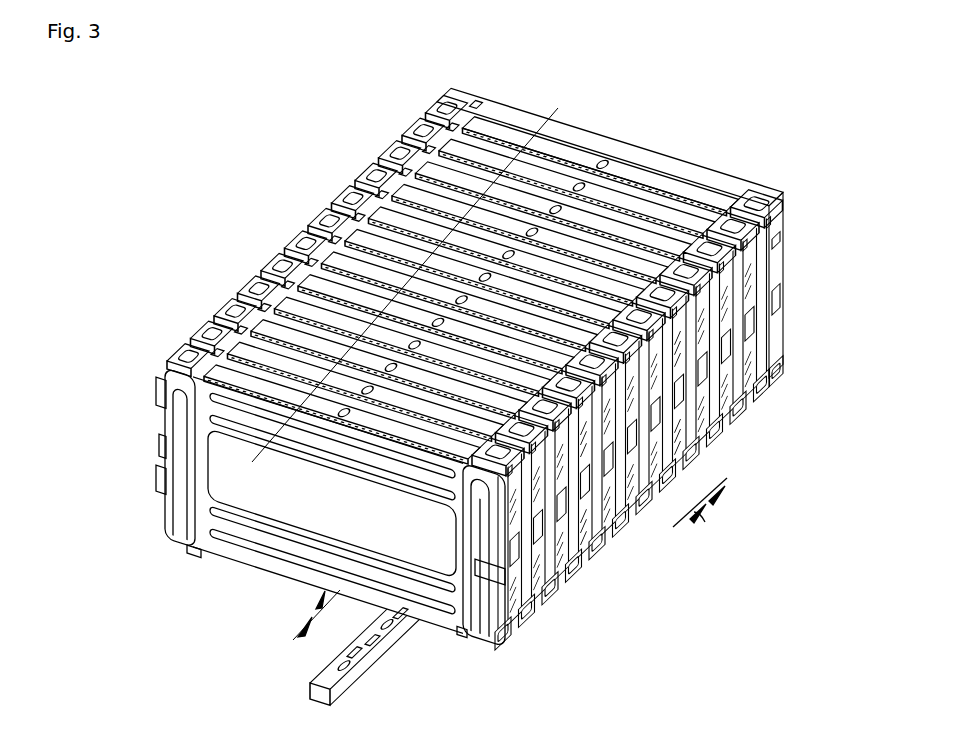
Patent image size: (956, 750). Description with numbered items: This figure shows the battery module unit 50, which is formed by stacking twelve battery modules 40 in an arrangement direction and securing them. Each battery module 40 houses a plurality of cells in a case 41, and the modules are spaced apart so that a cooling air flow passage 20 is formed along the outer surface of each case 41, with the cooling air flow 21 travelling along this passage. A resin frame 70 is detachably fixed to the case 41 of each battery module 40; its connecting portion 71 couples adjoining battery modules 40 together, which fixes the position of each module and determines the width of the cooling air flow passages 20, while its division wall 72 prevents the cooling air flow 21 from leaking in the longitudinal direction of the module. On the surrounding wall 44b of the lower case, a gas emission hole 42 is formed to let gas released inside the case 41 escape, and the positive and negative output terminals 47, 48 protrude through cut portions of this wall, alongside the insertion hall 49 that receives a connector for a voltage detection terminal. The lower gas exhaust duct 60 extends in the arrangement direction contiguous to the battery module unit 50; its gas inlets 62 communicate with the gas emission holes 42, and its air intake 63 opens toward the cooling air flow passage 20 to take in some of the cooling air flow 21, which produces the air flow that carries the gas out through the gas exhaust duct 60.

The cooling air flow passage 20 is at (334, 298).
The cooling air flow 21 is at (559, 110).
The battery module 40 is at (510, 128).
The case 41 is at (590, 143).
The gas emission hole 42 is at (604, 163).
The surrounding wall 44b is at (693, 192).
The positive output terminal 47 is at (162, 383).
The negative output terminal 48 is at (160, 478).
The insertion hall 49 is at (162, 443).
The battery module unit 50 is at (181, 134).
The gas exhaust duct 60 is at (316, 700).
The gas inlet 62 is at (348, 672).
The air intake 63 is at (357, 655).
The frame 70 is at (198, 340).
The connecting portion 71 is at (770, 208).
The division wall 72 is at (214, 548).